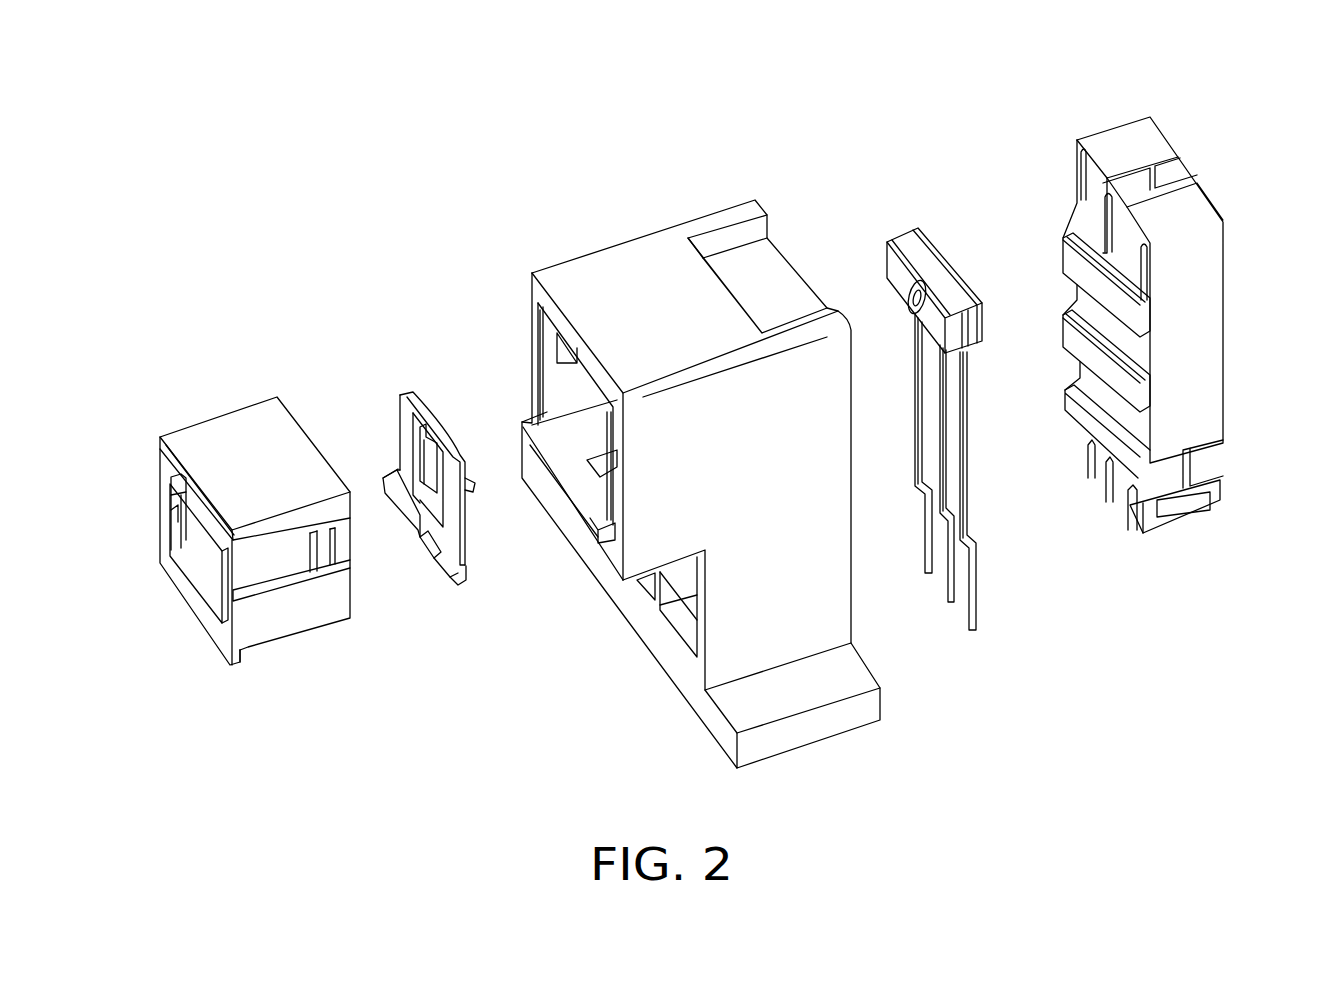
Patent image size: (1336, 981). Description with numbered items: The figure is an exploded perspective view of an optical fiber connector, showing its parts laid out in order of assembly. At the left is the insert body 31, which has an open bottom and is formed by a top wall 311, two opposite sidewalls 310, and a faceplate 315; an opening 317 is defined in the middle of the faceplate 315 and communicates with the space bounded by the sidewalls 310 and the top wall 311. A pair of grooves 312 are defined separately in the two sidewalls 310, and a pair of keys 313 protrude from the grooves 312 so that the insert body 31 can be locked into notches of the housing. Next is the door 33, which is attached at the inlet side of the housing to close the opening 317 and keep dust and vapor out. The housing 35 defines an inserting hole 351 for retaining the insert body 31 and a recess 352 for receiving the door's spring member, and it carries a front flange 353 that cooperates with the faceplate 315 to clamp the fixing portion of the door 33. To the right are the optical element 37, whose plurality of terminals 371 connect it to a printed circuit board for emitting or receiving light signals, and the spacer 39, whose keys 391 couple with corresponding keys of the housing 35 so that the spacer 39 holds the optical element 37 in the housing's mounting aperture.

The insert body 31 is at (222, 406).
The sidewalls 310 is at (256, 627).
The top wall 311 is at (273, 422).
The grooves 312 is at (164, 480).
The keys 313 is at (328, 548).
The faceplate 315 is at (188, 590).
The opening 317 is at (197, 527).
The door 33 is at (408, 384).
The housing 35 is at (619, 240).
The inserting hole 351 is at (566, 385).
The recess 352 is at (590, 462).
The front flange 353 is at (573, 512).
The optical element 37 is at (912, 224).
The terminals 371 is at (926, 573).
The spacer 39 is at (1133, 114).
The keys 391 is at (1165, 178).